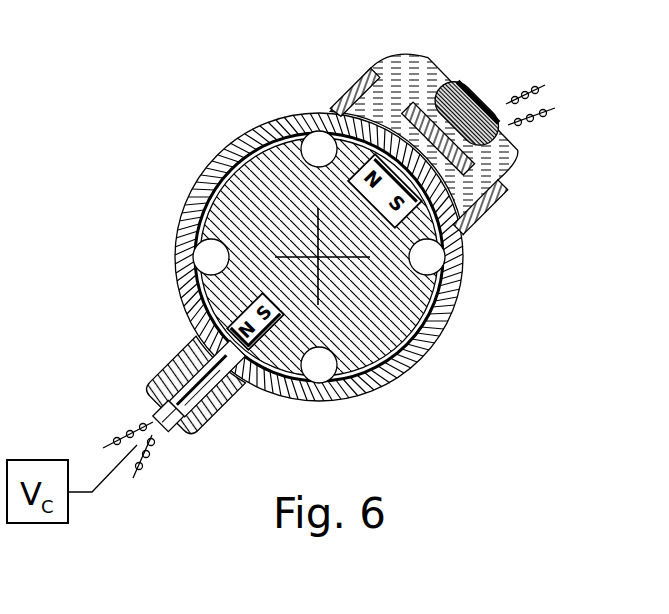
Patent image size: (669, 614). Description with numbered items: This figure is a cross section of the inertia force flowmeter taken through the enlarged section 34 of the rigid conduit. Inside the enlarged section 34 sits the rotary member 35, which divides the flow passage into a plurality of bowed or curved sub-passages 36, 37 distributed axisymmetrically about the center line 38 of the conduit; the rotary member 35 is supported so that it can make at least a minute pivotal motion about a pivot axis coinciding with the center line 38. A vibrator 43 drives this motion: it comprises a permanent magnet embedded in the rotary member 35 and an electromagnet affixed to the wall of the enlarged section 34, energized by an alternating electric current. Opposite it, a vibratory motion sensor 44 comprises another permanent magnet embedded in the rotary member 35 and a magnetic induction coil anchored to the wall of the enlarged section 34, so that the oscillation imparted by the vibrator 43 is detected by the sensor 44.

The enlarged section 34 is at (188, 266).
The rotary member 35 is at (399, 326).
The bowed or curved sub-passage 36 is at (323, 142).
The bowed or curved sub-passage 37 is at (321, 372).
The center line 38 is at (306, 236).
The vibrator 43 is at (412, 92).
The vibratory motion sensor 44 is at (216, 408).